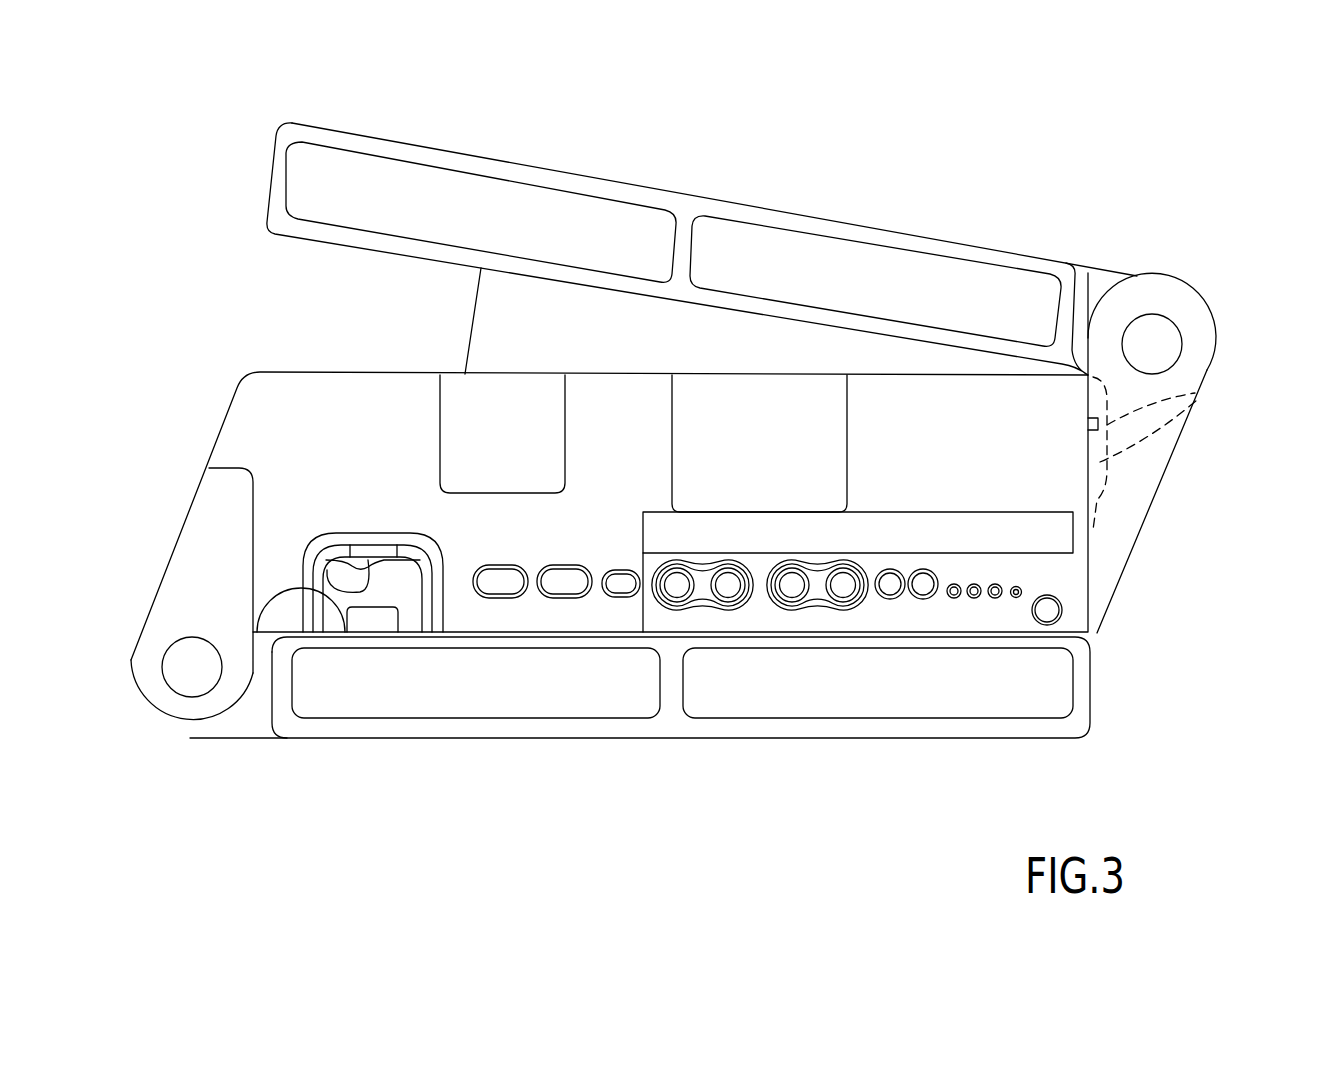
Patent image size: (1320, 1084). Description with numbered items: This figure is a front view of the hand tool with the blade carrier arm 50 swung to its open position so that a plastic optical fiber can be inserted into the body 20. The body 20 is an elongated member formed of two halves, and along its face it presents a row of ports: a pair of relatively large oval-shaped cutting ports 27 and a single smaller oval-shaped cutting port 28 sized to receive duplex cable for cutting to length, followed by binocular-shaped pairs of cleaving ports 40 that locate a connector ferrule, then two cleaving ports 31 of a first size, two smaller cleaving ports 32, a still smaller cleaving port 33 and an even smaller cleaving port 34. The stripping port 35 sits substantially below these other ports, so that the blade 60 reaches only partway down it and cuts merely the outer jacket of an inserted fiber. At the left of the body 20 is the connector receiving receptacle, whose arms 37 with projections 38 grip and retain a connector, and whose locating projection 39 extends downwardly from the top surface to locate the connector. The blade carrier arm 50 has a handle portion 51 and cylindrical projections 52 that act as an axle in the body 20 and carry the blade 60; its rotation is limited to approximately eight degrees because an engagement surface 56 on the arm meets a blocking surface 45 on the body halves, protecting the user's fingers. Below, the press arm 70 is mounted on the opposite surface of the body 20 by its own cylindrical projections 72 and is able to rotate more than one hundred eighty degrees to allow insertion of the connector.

The body 20 is at (255, 425).
The cutting ports 27 is at (563, 599).
The cutting port 28 is at (617, 600).
The cleaving ports 31 is at (923, 600).
The cleaving ports 32 is at (975, 599).
The cleaving port 33 is at (997, 599).
The cleaving port 34 is at (1023, 588).
The stripping port 35 is at (1062, 610).
The arms 37 is at (352, 600).
The projections 38 is at (422, 598).
The locating projection 39 is at (362, 592).
The cleaving ports 40 is at (817, 606).
The blocking surface 45 is at (1100, 464).
The blade carrier arm 50 is at (730, 203).
The handle portion 51 is at (597, 188).
The cylindrical projections 52 is at (1152, 323).
The engagement surface 56 is at (1195, 393).
The blade 60 is at (495, 320).
The press arm 70 is at (369, 738).
The cylindrical projections 72 is at (192, 680).